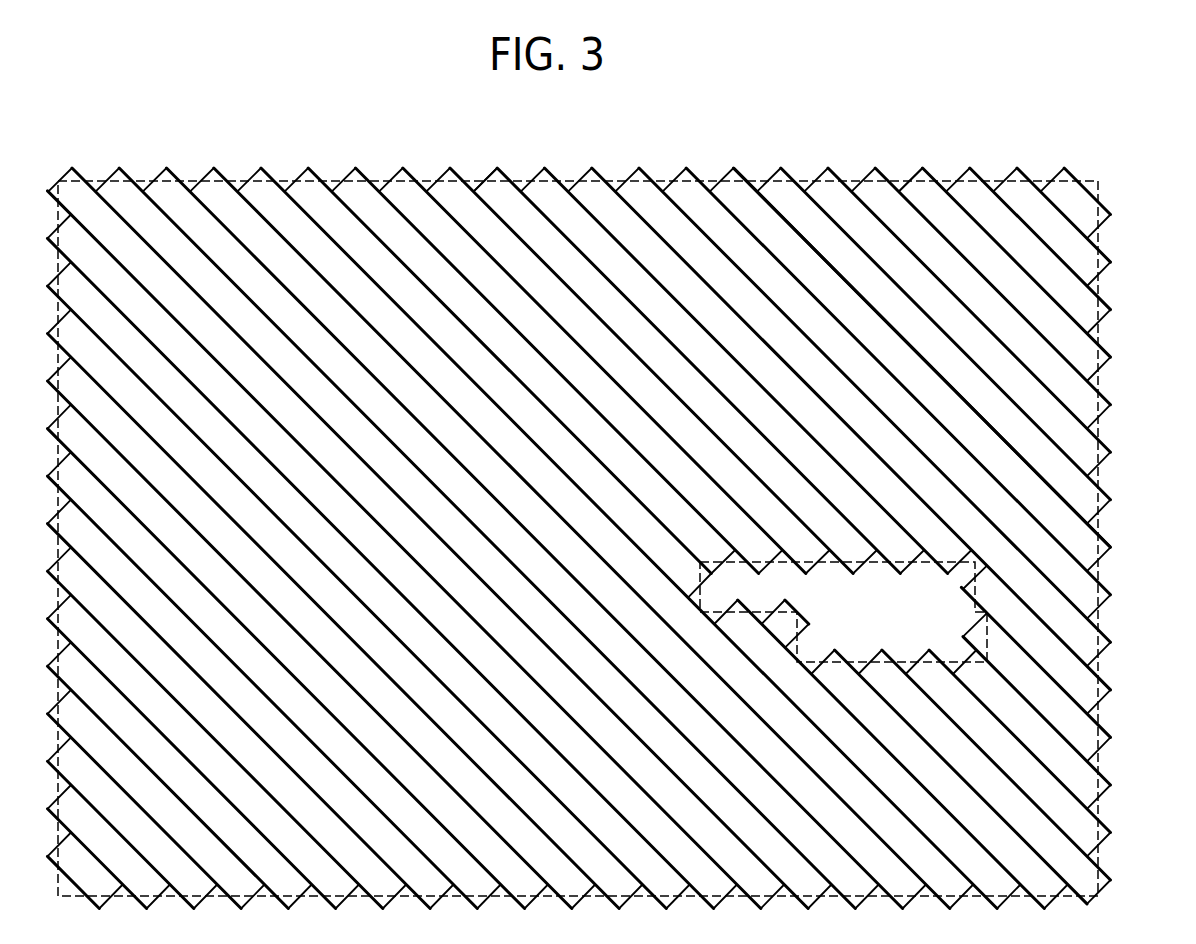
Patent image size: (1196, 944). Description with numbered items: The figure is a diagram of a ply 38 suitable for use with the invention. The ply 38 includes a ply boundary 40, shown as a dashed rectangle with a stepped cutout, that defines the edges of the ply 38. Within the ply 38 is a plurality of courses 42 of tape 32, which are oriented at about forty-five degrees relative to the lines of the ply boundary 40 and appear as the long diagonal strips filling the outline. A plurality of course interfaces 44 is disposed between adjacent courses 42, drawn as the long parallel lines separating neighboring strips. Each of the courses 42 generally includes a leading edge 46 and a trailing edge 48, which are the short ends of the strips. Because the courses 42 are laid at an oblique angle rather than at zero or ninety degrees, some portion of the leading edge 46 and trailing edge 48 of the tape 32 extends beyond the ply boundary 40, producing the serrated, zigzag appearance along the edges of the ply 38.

The tape 32 is at (173, 193).
The ply 38 is at (418, 154).
The ply boundary 40 is at (470, 180).
The courses 42 is at (787, 193).
The course interfaces 44 is at (795, 227).
The leading edge 46 is at (910, 178).
The trailing edge 48 is at (1100, 362).